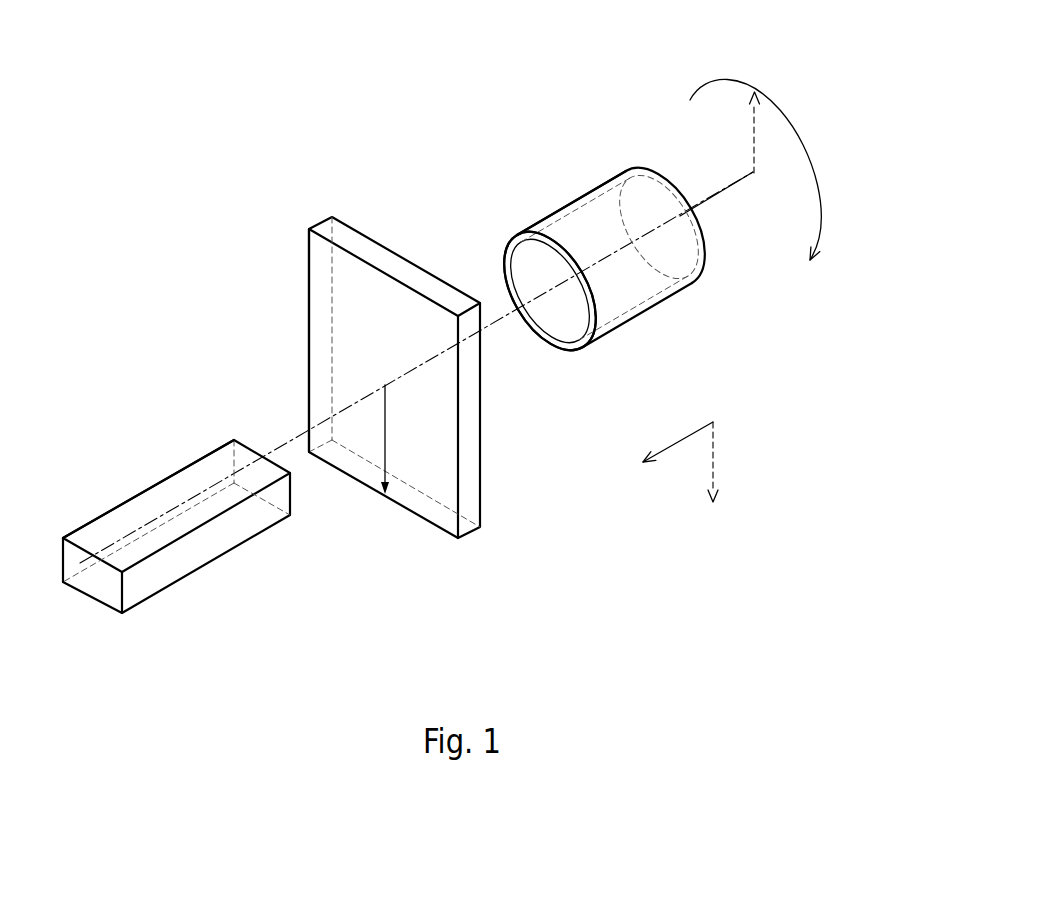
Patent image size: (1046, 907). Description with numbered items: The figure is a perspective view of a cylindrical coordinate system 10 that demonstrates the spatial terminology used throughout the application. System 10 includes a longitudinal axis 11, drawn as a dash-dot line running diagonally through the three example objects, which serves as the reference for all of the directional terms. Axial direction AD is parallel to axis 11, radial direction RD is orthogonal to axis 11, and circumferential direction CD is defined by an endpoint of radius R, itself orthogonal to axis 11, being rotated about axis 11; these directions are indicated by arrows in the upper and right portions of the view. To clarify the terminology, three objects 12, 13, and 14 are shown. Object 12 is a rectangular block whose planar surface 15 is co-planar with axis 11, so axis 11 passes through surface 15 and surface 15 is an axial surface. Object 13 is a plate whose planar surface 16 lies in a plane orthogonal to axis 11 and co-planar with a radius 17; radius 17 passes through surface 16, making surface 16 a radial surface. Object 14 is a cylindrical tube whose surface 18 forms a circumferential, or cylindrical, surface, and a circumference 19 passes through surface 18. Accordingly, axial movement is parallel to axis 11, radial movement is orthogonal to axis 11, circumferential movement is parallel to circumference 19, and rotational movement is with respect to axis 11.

The cylindrical coordinate system 10 is at (258, 258).
The longitudinal axis 11 is at (697, 210).
The object 12 is at (152, 611).
The object 13 is at (495, 533).
The object 14 is at (637, 328).
The axial surface 15 is at (142, 508).
The radial surface 16 is at (323, 339).
The radius 17 is at (385, 433).
The circumferential surface 18 is at (577, 200).
The circumference 19 is at (504, 258).
The radius R is at (754, 128).
The circumferential direction CD is at (790, 118).
The axial direction AD is at (678, 440).
The radial direction RD is at (713, 457).